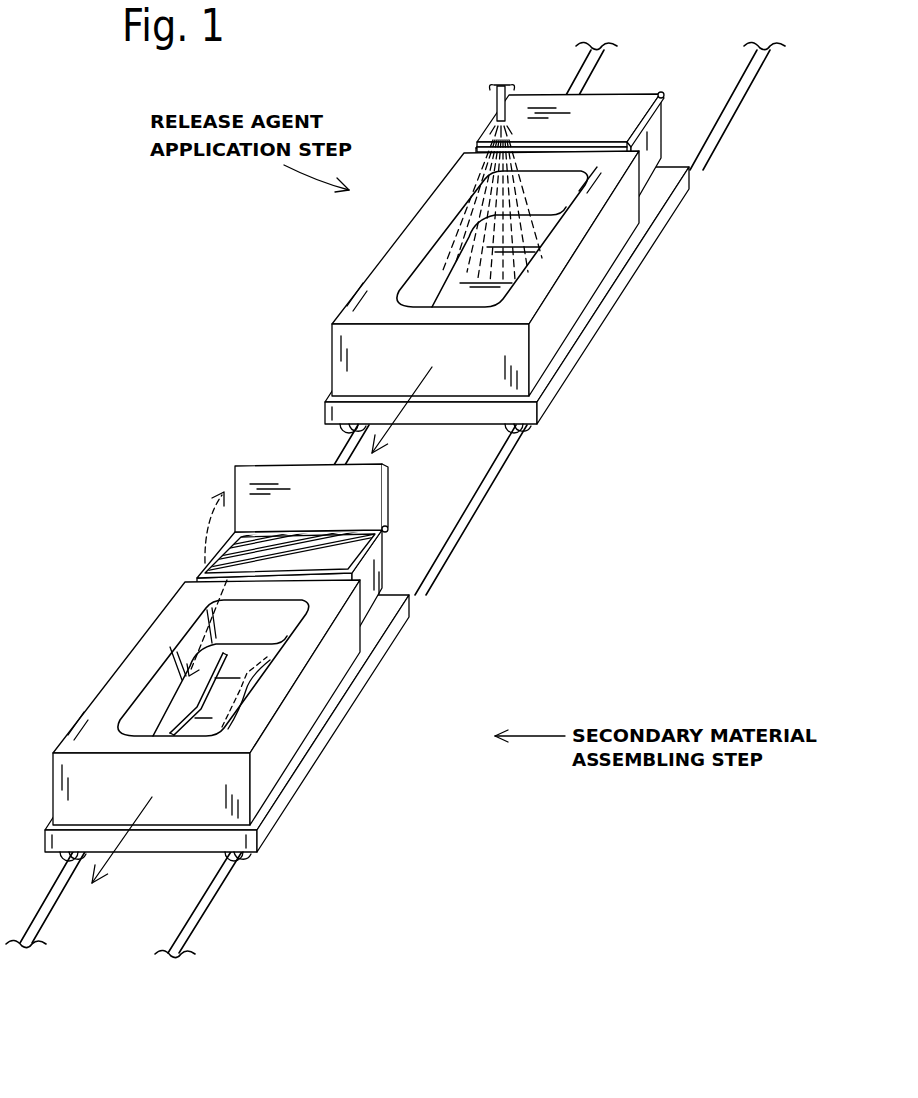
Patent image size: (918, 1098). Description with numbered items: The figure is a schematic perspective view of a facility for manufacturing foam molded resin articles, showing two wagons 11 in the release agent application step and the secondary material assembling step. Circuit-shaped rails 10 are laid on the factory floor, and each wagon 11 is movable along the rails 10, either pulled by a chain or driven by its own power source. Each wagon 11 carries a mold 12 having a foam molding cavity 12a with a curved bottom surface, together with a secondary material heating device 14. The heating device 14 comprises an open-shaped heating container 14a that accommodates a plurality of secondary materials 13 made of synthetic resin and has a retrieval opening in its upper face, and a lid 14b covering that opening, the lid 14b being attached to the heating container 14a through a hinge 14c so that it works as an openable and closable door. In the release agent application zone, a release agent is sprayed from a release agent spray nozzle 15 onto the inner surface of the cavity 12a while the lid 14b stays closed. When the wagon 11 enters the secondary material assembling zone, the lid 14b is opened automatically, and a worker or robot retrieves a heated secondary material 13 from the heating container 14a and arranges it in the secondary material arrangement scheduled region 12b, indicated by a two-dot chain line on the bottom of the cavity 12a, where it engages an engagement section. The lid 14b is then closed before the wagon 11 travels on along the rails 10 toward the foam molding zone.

The rails 10 is at (596, 56).
The wagon 11 is at (588, 324).
The mold 12 is at (602, 252).
The foam molding cavity 12a is at (423, 282).
The secondary material arrangement scheduled region 12b is at (247, 690).
The secondary material 13 is at (330, 556).
The secondary material heating device 14 is at (461, 340).
The heating container 14a is at (210, 572).
The lid 14b is at (248, 465).
The hinge 14c is at (554, 297).
The release agent spray nozzle 15 is at (497, 102).